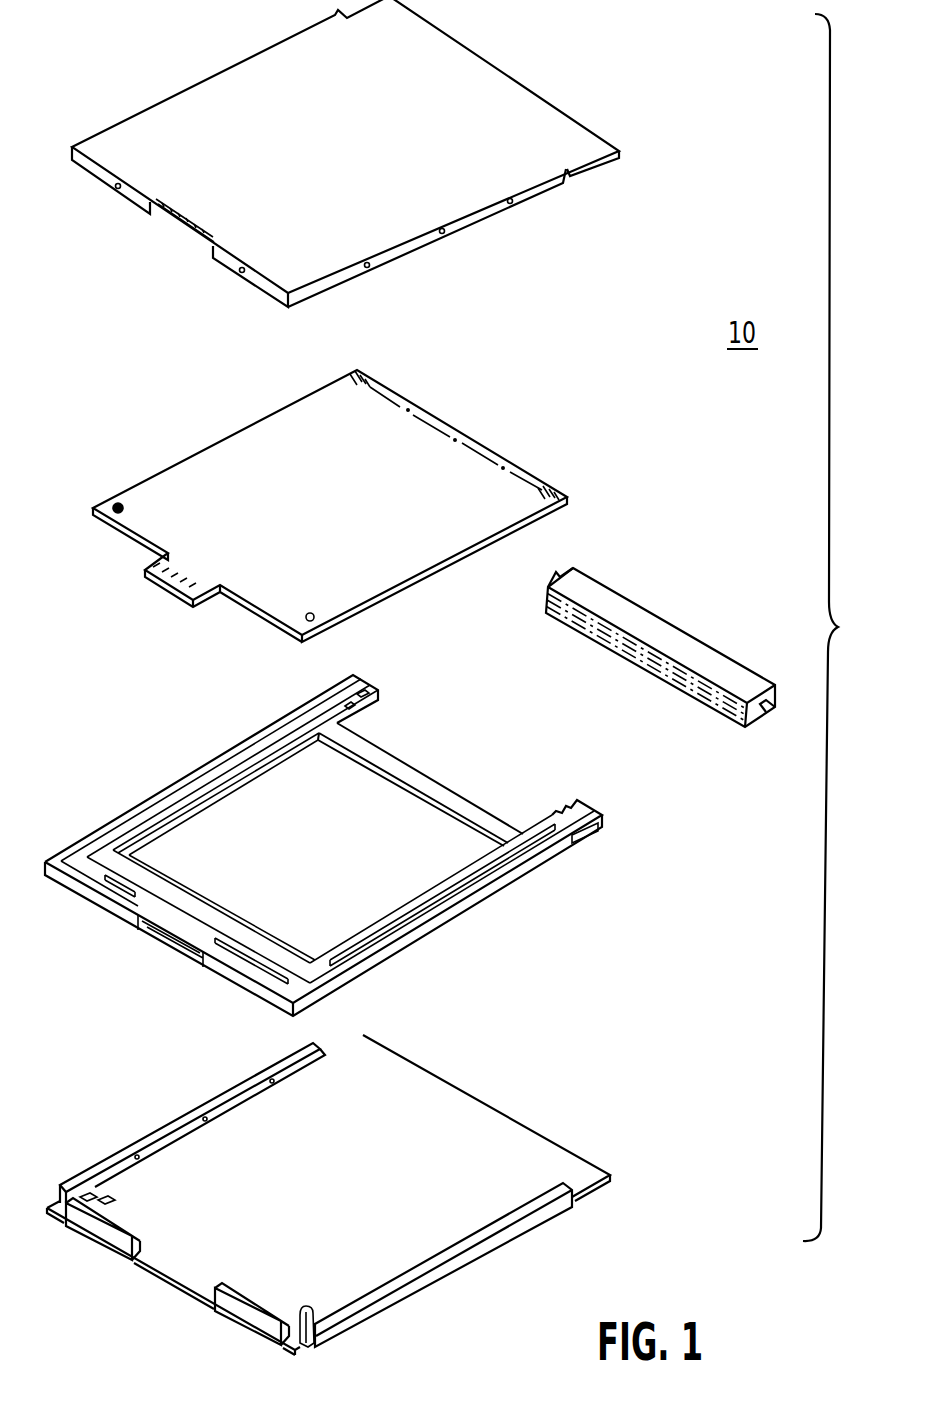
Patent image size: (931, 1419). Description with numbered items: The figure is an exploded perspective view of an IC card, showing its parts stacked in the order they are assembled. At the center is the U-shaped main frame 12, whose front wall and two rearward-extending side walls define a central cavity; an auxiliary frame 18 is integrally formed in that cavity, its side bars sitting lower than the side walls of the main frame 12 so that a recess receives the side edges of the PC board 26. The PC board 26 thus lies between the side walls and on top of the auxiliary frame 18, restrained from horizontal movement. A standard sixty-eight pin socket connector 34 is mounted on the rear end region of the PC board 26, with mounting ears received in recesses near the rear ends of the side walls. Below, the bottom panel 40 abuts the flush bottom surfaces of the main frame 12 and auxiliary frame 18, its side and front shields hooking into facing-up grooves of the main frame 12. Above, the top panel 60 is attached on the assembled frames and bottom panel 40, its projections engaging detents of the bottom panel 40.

The main frame 12 is at (495, 896).
The auxiliary frame 18 is at (417, 772).
The PC board 26 is at (502, 457).
The socket connector 34 is at (687, 632).
The bottom panel 40 is at (540, 1137).
The top panel 60 is at (538, 98).